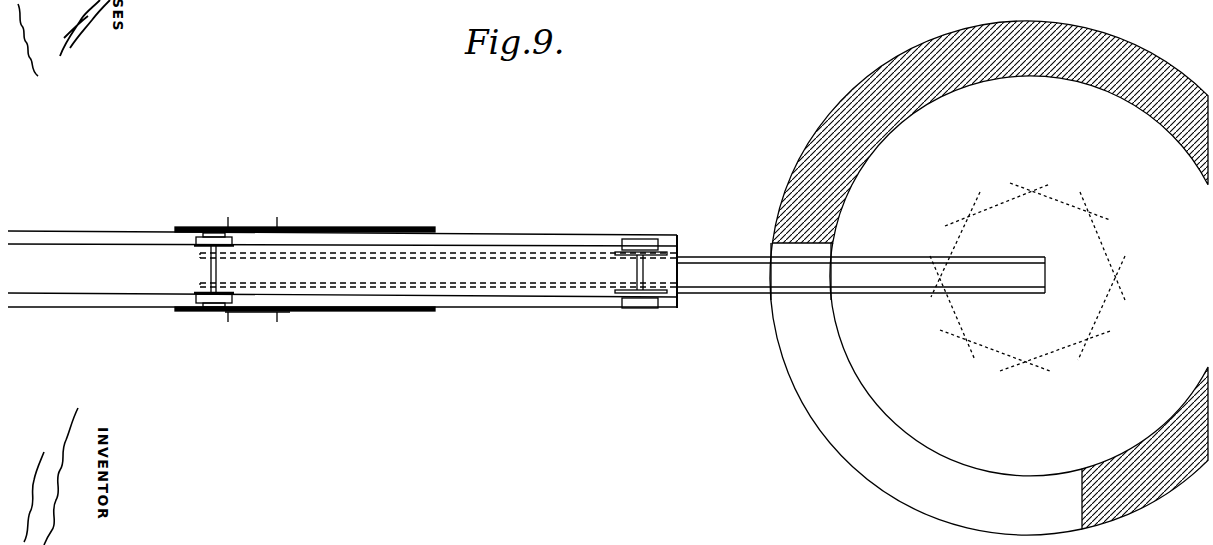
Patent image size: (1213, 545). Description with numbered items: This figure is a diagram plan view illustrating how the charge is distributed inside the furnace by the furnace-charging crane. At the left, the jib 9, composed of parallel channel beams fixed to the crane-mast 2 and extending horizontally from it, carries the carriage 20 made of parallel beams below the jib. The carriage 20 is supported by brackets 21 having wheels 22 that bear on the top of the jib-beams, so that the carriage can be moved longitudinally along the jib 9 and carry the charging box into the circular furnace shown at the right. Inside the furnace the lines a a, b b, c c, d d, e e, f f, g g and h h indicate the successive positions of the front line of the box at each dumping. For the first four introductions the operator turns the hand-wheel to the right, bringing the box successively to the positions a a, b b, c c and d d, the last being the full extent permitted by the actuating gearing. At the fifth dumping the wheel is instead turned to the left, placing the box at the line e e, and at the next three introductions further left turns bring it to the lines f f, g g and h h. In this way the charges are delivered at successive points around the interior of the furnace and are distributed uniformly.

The crane-mast 2 is at (305, 271).
The jib 9 is at (342, 272).
The carriage 20 is at (861, 275).
The brackets 21 is at (201, 311).
The wheels 22 is at (208, 238).
The line a a is at (1105, 246).
The line b b is at (1059, 199).
The line c c is at (996, 200).
The line d d is at (951, 243).
The line e e is at (1106, 308).
The line f f is at (1055, 355).
The line g g is at (993, 355).
The line h h is at (947, 308).